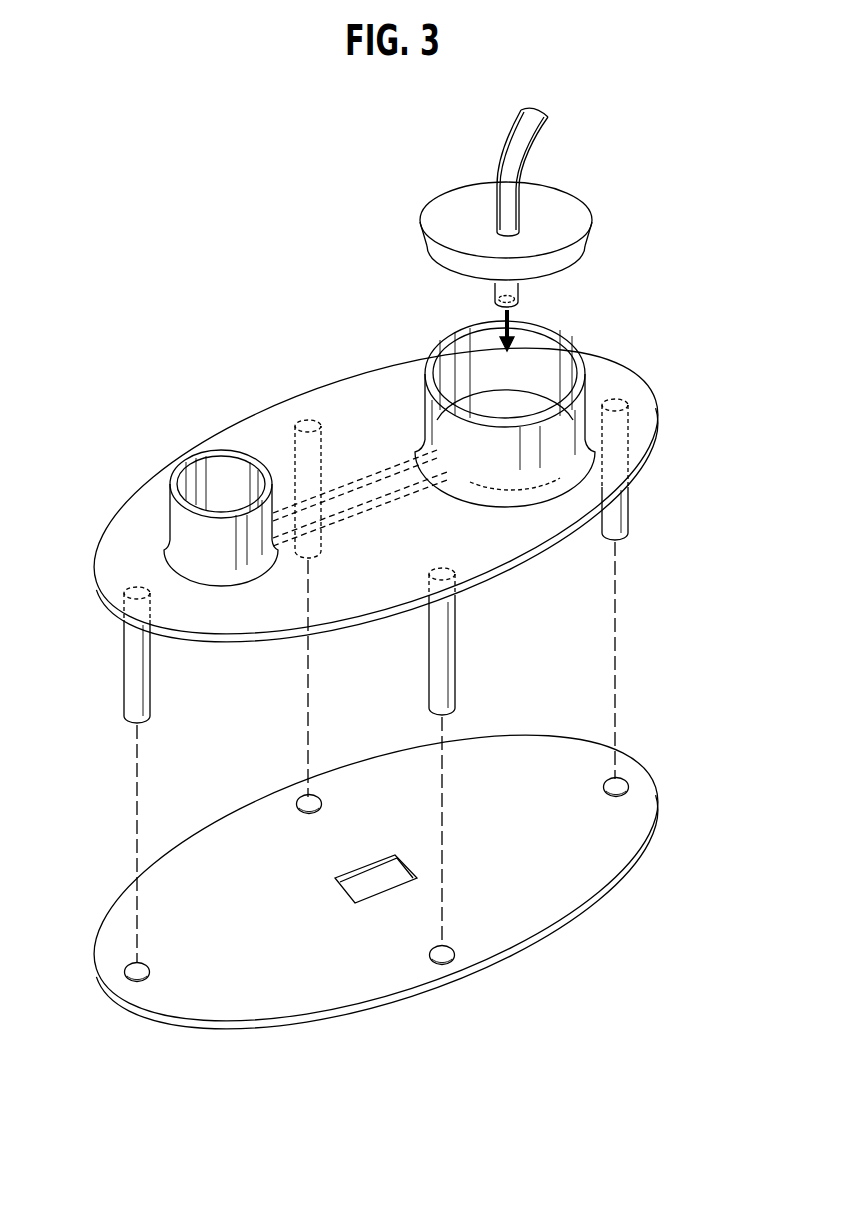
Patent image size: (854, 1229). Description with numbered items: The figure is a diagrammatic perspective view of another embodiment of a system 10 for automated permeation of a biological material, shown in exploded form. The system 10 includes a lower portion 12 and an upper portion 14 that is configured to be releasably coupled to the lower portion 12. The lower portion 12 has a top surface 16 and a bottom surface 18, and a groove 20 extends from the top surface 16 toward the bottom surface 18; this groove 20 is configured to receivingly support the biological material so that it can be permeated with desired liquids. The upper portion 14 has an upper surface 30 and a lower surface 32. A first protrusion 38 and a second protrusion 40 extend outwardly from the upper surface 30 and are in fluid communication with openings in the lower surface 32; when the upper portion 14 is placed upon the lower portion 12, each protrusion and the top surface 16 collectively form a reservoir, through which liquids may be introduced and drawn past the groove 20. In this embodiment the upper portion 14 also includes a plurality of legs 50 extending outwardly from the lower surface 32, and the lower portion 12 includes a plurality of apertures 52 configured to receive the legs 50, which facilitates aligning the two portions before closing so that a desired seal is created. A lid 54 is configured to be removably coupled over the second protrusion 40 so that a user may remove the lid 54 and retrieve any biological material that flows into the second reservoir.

The system 10 is at (686, 309).
The lower portion 12 is at (377, 882).
The upper portion 14 is at (376, 495).
The top surface 16 is at (600, 848).
The bottom surface 18 is at (573, 929).
The groove 20 is at (377, 898).
The upper surface 30 is at (353, 389).
The lower surface 32 is at (532, 566).
The first protrusion 38 is at (183, 458).
The second protrusion 40 is at (554, 337).
The leg 50 is at (130, 672).
The aperture 52 is at (131, 982).
The lid 54 is at (566, 209).